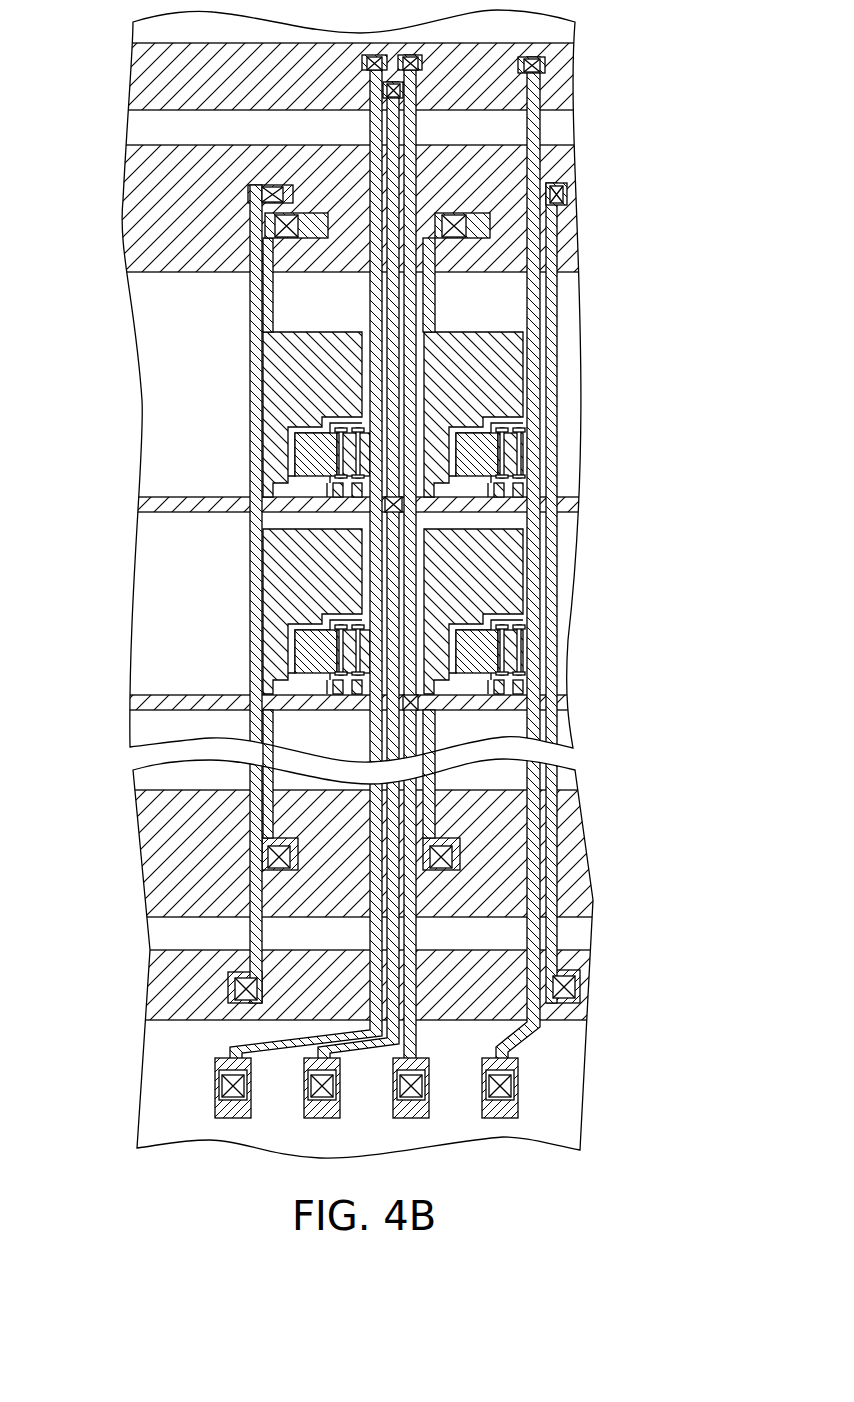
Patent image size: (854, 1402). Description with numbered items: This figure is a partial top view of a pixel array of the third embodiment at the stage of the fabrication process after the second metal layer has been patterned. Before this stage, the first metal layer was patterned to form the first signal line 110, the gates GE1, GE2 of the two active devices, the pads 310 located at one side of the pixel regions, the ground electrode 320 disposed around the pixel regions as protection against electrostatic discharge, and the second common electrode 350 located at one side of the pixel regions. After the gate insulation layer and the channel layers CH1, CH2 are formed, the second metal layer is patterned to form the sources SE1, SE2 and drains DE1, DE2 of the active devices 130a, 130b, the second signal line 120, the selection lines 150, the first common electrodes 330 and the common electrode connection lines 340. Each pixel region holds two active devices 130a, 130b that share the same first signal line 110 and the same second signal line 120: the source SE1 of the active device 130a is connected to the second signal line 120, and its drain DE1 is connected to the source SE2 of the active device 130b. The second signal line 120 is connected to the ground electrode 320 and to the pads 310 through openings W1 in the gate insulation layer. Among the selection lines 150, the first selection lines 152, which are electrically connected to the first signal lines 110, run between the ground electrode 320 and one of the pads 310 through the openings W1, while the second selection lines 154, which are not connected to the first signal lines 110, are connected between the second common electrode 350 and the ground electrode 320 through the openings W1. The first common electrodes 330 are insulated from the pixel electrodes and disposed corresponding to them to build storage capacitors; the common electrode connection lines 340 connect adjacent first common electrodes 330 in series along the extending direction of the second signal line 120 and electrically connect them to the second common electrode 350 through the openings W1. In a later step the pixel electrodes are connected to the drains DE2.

The first signal line 110 is at (135, 505).
The second signal line 120 is at (275, 225).
The active device 130a is at (505, 451).
The active device 130b is at (505, 612).
The selection line 150 is at (390, 567).
The first selection line 152 is at (470, 238).
The second selection line 154 is at (252, 290).
The pad 310 is at (230, 1118).
The ground electrode 320 is at (137, 82).
The first common electrode 330 is at (285, 370).
The common electrode connection line 340 is at (266, 332).
The second common electrode 350 is at (135, 216).
The opening W1 is at (385, 92).
The gate GE1 is at (540, 512).
The source SE1 is at (490, 442).
The channel layer CH1 is at (522, 485).
The drain DE1 is at (522, 405).
The gate GE2 is at (522, 600).
The source SE2 is at (645, 644).
The channel layer CH2 is at (522, 572).
The drain DE2 is at (522, 628).